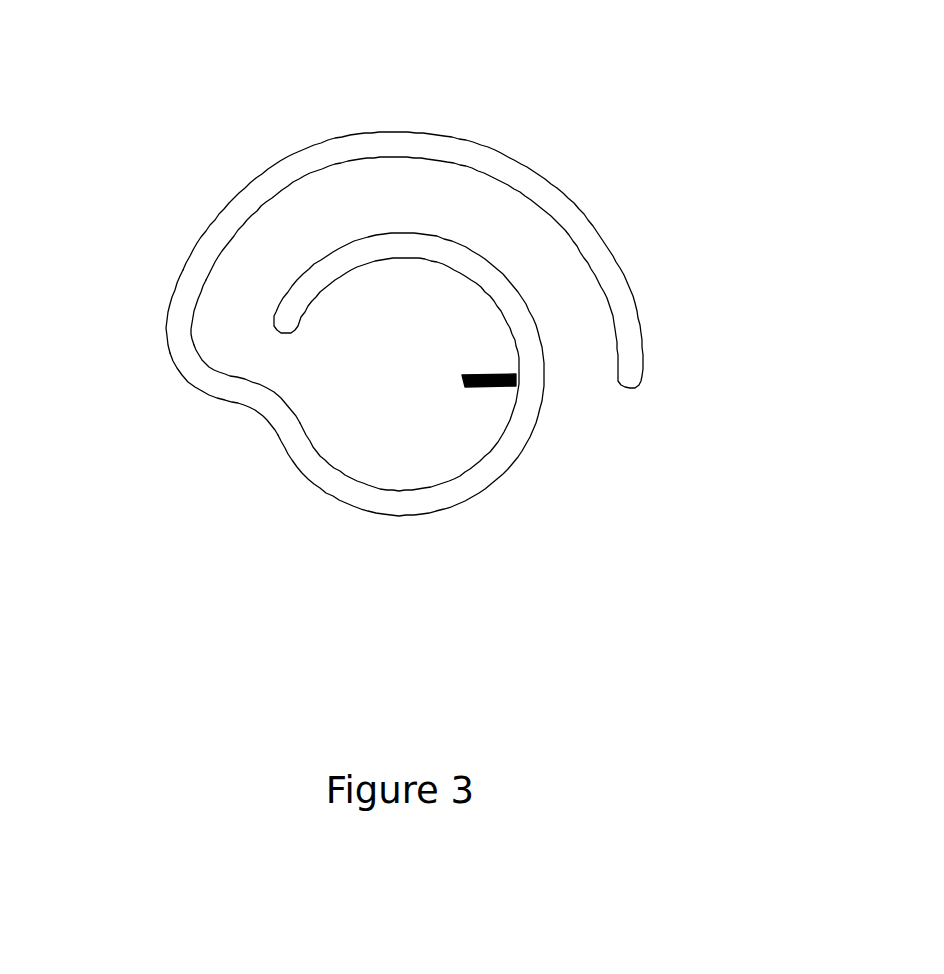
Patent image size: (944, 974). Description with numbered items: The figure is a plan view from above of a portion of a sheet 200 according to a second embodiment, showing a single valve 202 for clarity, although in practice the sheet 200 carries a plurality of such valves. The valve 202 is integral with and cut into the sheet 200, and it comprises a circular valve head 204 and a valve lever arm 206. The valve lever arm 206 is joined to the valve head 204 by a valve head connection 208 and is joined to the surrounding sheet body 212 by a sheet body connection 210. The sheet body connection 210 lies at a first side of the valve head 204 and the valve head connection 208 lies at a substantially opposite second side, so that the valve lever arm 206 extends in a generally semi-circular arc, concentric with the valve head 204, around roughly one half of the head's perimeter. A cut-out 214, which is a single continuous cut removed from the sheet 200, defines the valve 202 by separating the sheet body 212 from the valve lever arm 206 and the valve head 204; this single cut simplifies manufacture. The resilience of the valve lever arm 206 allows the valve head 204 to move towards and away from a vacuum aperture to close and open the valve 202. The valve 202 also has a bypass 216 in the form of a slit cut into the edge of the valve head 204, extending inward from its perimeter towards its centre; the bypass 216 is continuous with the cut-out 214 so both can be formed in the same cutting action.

The sheet 200 is at (130, 96).
The valve 202 is at (273, 515).
The valve head 204 is at (391, 436).
The valve lever arm 206 is at (510, 217).
The valve head connection 208 is at (272, 362).
The sheet body connection 210 is at (571, 385).
The sheet body 212 is at (744, 452).
The cut-out 214 is at (186, 297).
The bypass 216 is at (482, 388).